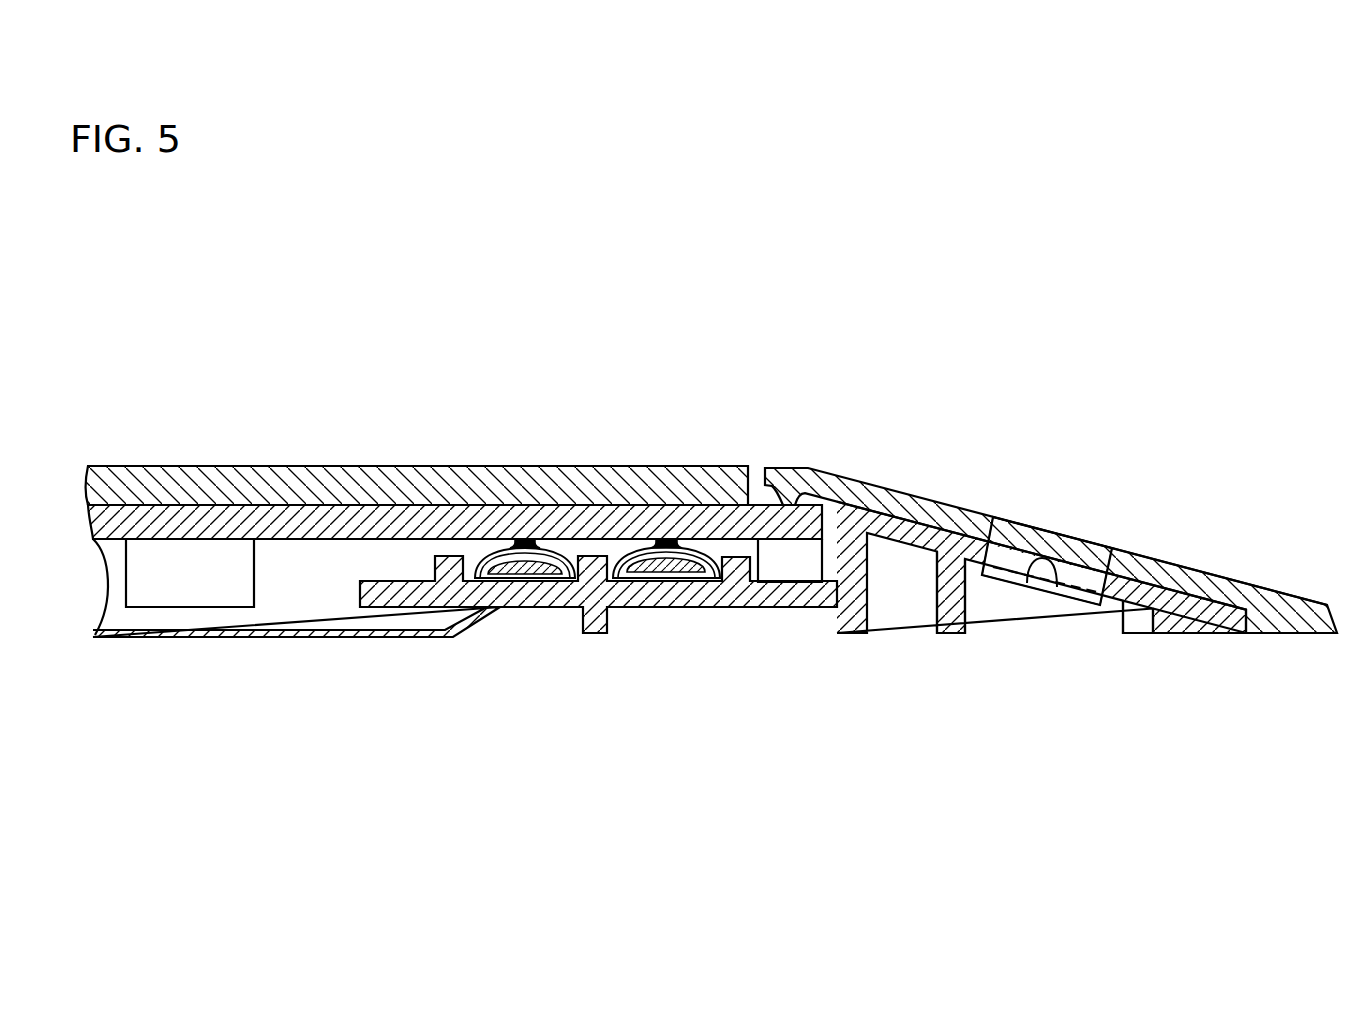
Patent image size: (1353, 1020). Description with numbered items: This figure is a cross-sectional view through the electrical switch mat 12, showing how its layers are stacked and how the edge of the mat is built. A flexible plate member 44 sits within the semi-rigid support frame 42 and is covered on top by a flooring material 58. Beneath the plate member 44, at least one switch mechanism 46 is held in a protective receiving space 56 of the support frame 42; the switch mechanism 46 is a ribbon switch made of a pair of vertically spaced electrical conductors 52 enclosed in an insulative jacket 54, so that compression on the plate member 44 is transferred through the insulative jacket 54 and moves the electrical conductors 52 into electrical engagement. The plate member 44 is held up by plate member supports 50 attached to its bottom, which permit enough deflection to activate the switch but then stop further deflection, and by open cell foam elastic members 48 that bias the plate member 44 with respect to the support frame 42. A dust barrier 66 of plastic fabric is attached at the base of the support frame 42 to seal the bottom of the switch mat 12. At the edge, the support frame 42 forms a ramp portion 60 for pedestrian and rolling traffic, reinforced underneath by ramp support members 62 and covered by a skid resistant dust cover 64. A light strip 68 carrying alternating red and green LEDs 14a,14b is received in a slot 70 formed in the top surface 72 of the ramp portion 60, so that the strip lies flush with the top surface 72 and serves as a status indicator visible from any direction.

The electrical switch mat 12 is at (355, 280).
The red and green LEDs 14a,14b is at (1047, 535).
The support frame 42 is at (843, 635).
The plate member 44 is at (571, 510).
The switch mechanism 46 is at (655, 592).
The elastic member 48 is at (805, 560).
The plate member support 50 is at (180, 588).
The electrical conductors 52 is at (528, 550).
The insulative jacket 54 is at (488, 576).
The protective receiving space 56 is at (697, 578).
The flooring material 58 is at (305, 485).
The ramp portion 60 is at (1213, 612).
The ramp support members 62 is at (1130, 635).
The skid resistant dust cover 64 is at (935, 503).
The dust barrier 66 is at (284, 640).
The light strip 68 is at (1022, 524).
The slot 70 is at (1060, 568).
The top surface 72 is at (1200, 571).